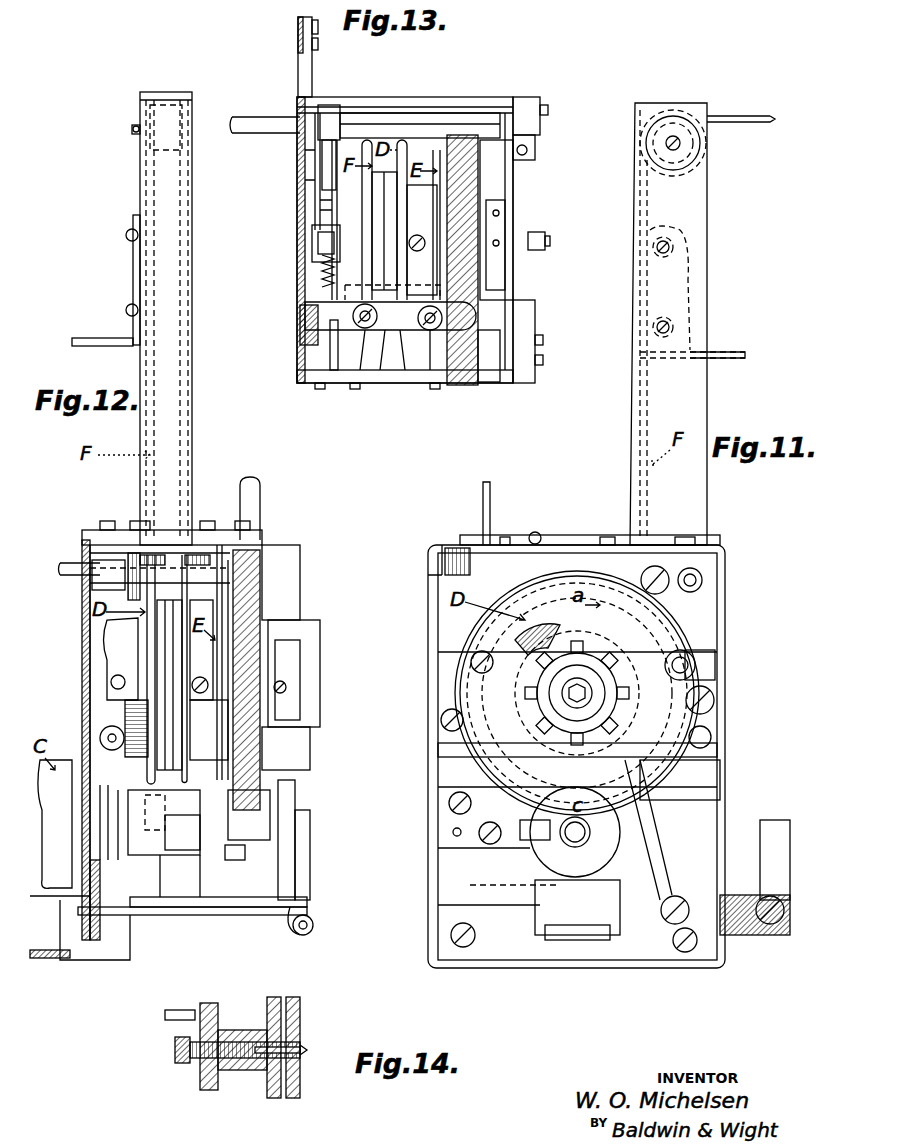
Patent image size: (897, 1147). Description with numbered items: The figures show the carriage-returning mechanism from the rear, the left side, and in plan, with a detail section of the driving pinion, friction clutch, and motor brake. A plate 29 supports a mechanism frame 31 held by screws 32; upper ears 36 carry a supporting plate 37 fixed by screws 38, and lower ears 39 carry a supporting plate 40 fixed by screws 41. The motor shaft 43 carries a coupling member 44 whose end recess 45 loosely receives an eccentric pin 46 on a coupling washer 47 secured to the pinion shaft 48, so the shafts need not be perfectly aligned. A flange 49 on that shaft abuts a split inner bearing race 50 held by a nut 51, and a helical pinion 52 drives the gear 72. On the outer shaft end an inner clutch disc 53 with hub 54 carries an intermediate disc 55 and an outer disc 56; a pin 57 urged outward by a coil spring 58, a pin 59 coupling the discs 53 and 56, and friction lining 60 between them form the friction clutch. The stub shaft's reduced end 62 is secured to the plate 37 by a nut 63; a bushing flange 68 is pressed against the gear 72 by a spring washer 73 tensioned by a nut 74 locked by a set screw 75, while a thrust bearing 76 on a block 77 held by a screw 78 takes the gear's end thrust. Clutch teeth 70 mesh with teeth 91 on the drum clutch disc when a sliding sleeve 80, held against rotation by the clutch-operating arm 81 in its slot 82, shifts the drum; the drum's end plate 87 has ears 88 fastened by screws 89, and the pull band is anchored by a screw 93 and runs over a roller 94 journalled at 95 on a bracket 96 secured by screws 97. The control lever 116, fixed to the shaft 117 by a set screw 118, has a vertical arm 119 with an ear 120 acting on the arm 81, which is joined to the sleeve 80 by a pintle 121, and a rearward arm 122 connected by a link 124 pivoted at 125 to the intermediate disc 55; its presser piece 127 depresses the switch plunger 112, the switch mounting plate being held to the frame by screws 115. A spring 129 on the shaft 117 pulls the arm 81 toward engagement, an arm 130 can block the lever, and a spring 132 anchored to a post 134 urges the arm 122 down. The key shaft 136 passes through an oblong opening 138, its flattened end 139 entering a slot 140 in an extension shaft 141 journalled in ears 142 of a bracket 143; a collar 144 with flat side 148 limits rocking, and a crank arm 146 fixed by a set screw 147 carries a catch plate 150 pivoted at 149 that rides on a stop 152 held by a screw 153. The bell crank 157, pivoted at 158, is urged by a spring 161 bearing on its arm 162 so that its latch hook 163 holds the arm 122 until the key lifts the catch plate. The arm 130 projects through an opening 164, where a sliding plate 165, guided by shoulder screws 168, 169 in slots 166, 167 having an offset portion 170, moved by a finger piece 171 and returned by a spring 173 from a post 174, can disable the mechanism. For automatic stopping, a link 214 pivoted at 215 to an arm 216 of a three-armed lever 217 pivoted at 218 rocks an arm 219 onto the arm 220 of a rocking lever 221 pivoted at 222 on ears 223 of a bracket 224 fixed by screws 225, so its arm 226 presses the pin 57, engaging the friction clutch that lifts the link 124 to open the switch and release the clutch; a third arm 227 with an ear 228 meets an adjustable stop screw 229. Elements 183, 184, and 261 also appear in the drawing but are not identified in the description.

In FIG. 12, the plate 29 is at (50, 958).
In FIG. 13, the mechanism frame 31 is at (360, 385).
In FIG. 12, the mechanism frame 31 is at (90, 950).
In FIG. 11, the mechanism frame 31 is at (480, 965).
In FIG. 12, the screws 32 is at (110, 945).
In FIG. 11, the screws 32 is at (700, 965).
In FIG. 13, the upper ears 36 is at (520, 100).
In FIG. 12, the upper ears 36 is at (300, 640).
In FIG. 13, the supporting plate 37 is at (510, 318).
In FIG. 12, the supporting plate 37 is at (300, 675).
In FIG. 11, the supporting plate 37 is at (470, 662).
In FIG. 13, the screws 38 is at (540, 112).
In FIG. 12, the screws 38 is at (305, 735).
In FIG. 11, the screws 38 is at (712, 733).
In FIG. 11, the lower ears 39 is at (480, 852).
In FIG. 12, the supporting plate 40 is at (195, 860).
In FIG. 11, the supporting plate 40 is at (530, 870).
In FIG. 14, the supporting plate 40 is at (205, 1010).
In FIG. 11, the screws 41 is at (452, 832).
In FIG. 12, the motor shaft 43 is at (55, 830).
In FIG. 12, the coupling member 44 is at (165, 880).
In FIG. 12, the end recess 45 is at (175, 800).
In FIG. 12, the eccentrically disposed pin 46 is at (150, 815).
In FIG. 14, the eccentrically disposed pin 46 is at (175, 1012).
In FIG. 12, the coupling washer 47 is at (180, 820).
In FIG. 14, the coupling washer 47 is at (175, 1028).
In FIG. 12, the pinion shaft 48 is at (249, 859).
In FIG. 14, the pinion shaft 48 is at (175, 1055).
In FIG. 14, the flange 49 is at (225, 1025).
In FIG. 14, the split inner anti-friction bearing race 50 is at (200, 1068).
In FIG. 14, the nut 51 is at (185, 1065).
In FIG. 12, the pinion 52 is at (298, 885).
In FIG. 14, the pinion 52 is at (250, 1062).
In FIG. 14, the inner clutch disc 53 is at (275, 1000).
In FIG. 14, the hub 54 is at (265, 1025).
In FIG. 14, the intermediate disc 55 is at (295, 1005).
In FIG. 14, the outer disc 56 is at (300, 1012).
In FIG. 12, the pin 57 is at (310, 830).
In FIG. 14, the pin 57 is at (305, 1045).
In FIG. 14, the coil spring 58 is at (225, 1063).
In FIG. 14, the pin 59 is at (300, 1065).
In FIG. 14, the friction clutch lining 60 is at (283, 1098).
In FIG. 13, the reduced end 62 is at (540, 248).
In FIG. 12, the reduced end 62 is at (322, 680).
In FIG. 11, the reduced end 62 is at (529, 676).
In FIG. 13, the nut 63 is at (547, 240).
In FIG. 12, the nut 63 is at (320, 720).
In FIG. 13, the peripheral flange 68 is at (495, 305).
In FIG. 12, the peripheral flange 68 is at (300, 655).
In FIG. 13, the teeth 70 is at (435, 225).
In FIG. 12, the teeth 70 is at (178, 705).
In FIG. 13, the gear 72 is at (470, 375).
In FIG. 12, the gear 72 is at (260, 610).
In FIG. 11, the gear 72 is at (530, 580).
In FIG. 13, the spring washer 73 is at (505, 205).
In FIG. 12, the spring washer 73 is at (285, 635).
In FIG. 13, the nut 74 is at (513, 215).
In FIG. 12, the nut 74 is at (312, 705).
In FIG. 12, the set screw 75 is at (315, 692).
In FIG. 11, the set screw 75 is at (529, 701).
In FIG. 12, the anti-friction thrust bearing 76 is at (305, 768).
In FIG. 11, the anti-friction thrust bearing 76 is at (532, 776).
In FIG. 12, the block 77 is at (310, 755).
In FIG. 12, the screw 78 is at (310, 745).
In FIG. 11, the screw 78 is at (529, 721).
In FIG. 13, the sleeve 80 is at (405, 258).
In FIG. 12, the sleeve 80 is at (100, 672).
In FIG. 13, the clutch-operating arm 81 is at (320, 250).
In FIG. 12, the clutch-operating arm 81 is at (100, 650).
In FIG. 13, the slot 82 is at (320, 232).
In FIG. 12, the end plate 87 is at (206, 606).
In FIG. 13, the ears 88 is at (398, 220).
In FIG. 12, the ears 88 is at (180, 655).
In FIG. 13, the screws 89 is at (408, 240).
In FIG. 12, the screws 89 is at (192, 683).
In FIG. 13, the teeth 91 is at (440, 200).
In FIG. 12, the teeth 91 is at (225, 650).
In FIG. 12, the screw 93 is at (170, 604).
In FIG. 11, the screw 93 is at (540, 625).
In FIG. 12, the pulley or roller 94 is at (140, 95).
In FIG. 11, the pulley or roller 94 is at (700, 150).
In FIG. 12, the journal 95 is at (135, 130).
In FIG. 11, the journal 95 is at (680, 142).
In FIG. 12, the bracket 96 is at (140, 178).
In FIG. 11, the bracket 96 is at (707, 210).
In FIG. 12, the screws 97 is at (110, 527).
In FIG. 11, the screws 97 is at (605, 538).
In FIG. 12, the plunger 112 is at (160, 795).
In FIG. 11, the screws 115 is at (735, 810).
In FIG. 13, the lever 116 is at (302, 155).
In FIG. 12, the lever 116 is at (82, 800).
In FIG. 13, the shaft 117 is at (322, 385).
In FIG. 12, the shaft 117 is at (82, 780).
In FIG. 11, the shaft 117 is at (438, 750).
In FIG. 13, the set screw 118 is at (310, 175).
In FIG. 12, the set screw 118 is at (100, 742).
In FIG. 13, the vertically extending arm 119 is at (315, 195).
In FIG. 12, the vertically extending arm 119 is at (100, 612).
In FIG. 11, the vertically extending arm 119 is at (620, 640).
In FIG. 13, the ear 120 is at (322, 208).
In FIG. 12, the ear 120 is at (110, 630).
In FIG. 11, the ear 120 is at (582, 611).
In FIG. 13, the pintle 121 is at (300, 240).
In FIG. 12, the pintle 121 is at (110, 685).
In FIG. 12, the horizontally and rearwardly extending arm 122 is at (110, 700).
In FIG. 13, the link 124 is at (520, 172).
In FIG. 12, the link 124 is at (295, 790).
In FIG. 11, the link 124 is at (725, 815).
In FIG. 12, the pivot 125 is at (298, 870).
In FIG. 11, the pivot 125 is at (640, 900).
In FIG. 12, the presser piece 127 is at (147, 780).
In FIG. 13, the spring 129 is at (322, 268).
In FIG. 12, the spring 129 is at (100, 715).
In FIG. 11, the spring 129 is at (471, 803).
In FIG. 13, the arm 130 is at (330, 345).
In FIG. 12, the arm 130 is at (95, 580).
In FIG. 11, the arm 130 is at (500, 565).
In FIG. 12, the spring 132 is at (285, 805).
In FIG. 11, the spring 132 is at (715, 785).
In FIG. 12, the fixed post 134 is at (250, 845).
In FIG. 13, the shaft 136 is at (300, 122).
In FIG. 12, the shaft 136 is at (65, 565).
In FIG. 13, the oblong opening 138 is at (297, 103).
In FIG. 13, the flattened end 139 is at (330, 105).
In FIG. 12, the flattened end 139 is at (98, 540).
In FIG. 13, the slot 140 is at (305, 130).
In FIG. 13, the extension shaft 141 is at (395, 120).
In FIG. 12, the extension shaft 141 is at (202, 571).
In FIG. 11, the extension shaft 141 is at (710, 595).
In FIG. 13, the ears 142 is at (355, 115).
In FIG. 11, the ears 142 is at (710, 620).
In FIG. 13, the bracket 143 is at (455, 115).
In FIG. 13, the collar 144 is at (472, 110).
In FIG. 12, the collar 144 is at (240, 545).
In FIG. 13, the crank arm 146 is at (505, 105).
In FIG. 12, the crank arm 146 is at (290, 560).
In FIG. 11, the crank arm 146 is at (700, 545).
In FIG. 13, the set screw 147 is at (490, 110).
In FIG. 12, the set screw 147 is at (275, 550).
In FIG. 11, the set screw 147 is at (705, 560).
In FIG. 11, the flat side 148 is at (710, 585).
In FIG. 13, the pivot 149 is at (515, 160).
In FIG. 12, the pivot 149 is at (290, 570).
In FIG. 11, the pivot 149 is at (660, 570).
In FIG. 13, the catch plate 150 is at (510, 185).
In FIG. 12, the catch plate 150 is at (290, 585).
In FIG. 13, the stop 152 is at (533, 150).
In FIG. 12, the stop 152 is at (290, 620).
In FIG. 13, the screw 153 is at (535, 135).
In FIG. 12, the screw 153 is at (322, 662).
In FIG. 11, the bell crank 157 is at (712, 698).
In FIG. 11, the pivot 158 is at (712, 708).
In FIG. 11, the spring 161 is at (700, 640).
In FIG. 11, the arm 162 is at (705, 655).
In FIG. 11, the latch hook 163 is at (708, 680).
In FIG. 13, the opening 164 is at (305, 318).
In FIG. 12, the opening 164 is at (82, 545).
In FIG. 13, the plate 165 is at (400, 330).
In FIG. 12, the plate 165 is at (262, 525).
In FIG. 11, the plate 165 is at (505, 535).
In FIG. 13, the slot 166 is at (385, 330).
In FIG. 13, the slot 167 is at (450, 370).
In FIG. 13, the shoulder screw 168 is at (365, 330).
In FIG. 12, the shoulder screw 168 is at (148, 527).
In FIG. 13, the shoulder screw 169 is at (420, 335).
In FIG. 12, the shoulder screw 169 is at (220, 522).
In FIG. 11, the shoulder screw 169 is at (483, 530).
In FIG. 13, the offset portion 170 is at (475, 318).
In FIG. 13, the finger piece 171 is at (470, 345).
In FIG. 12, the finger piece 171 is at (262, 500).
In FIG. 11, the finger piece 171 is at (483, 495).
In FIG. 13, the spring 173 is at (330, 280).
In FIG. 12, the spring 173 is at (188, 520).
In FIG. 13, the fixed post 174 is at (455, 292).
In FIG. 12, the fixed post 174 is at (205, 520).
In FIG. 11, the fixed post 174 is at (545, 535).
In FIG. 12, the bracket 183 is at (135, 280).
In FIG. 11, the bracket 183 is at (690, 287).
In FIG. 12, the screw 184 is at (131, 236).
In FIG. 11, the screw 184 is at (673, 250).
In FIG. 13, the link 214 is at (298, 30).
In FIG. 11, the link 214 is at (772, 828).
In FIG. 13, the pivot 215 is at (312, 42).
In FIG. 11, the pivot 215 is at (772, 925).
In FIG. 13, the arm 216 is at (302, 75).
In FIG. 11, the arm 216 is at (755, 935).
In FIG. 12, the three-armed lever 217 is at (88, 896).
In FIG. 11, the three-armed lever 217 is at (740, 940).
In FIG. 12, the pivot 218 is at (128, 935).
In FIG. 11, the pivot 218 is at (675, 930).
In FIG. 12, the arm 219 is at (110, 875).
In FIG. 11, the arm 219 is at (535, 890).
In FIG. 12, the horizontally extending arm 220 is at (190, 912).
In FIG. 11, the horizontally extending arm 220 is at (535, 912).
In FIG. 12, the rocking lever 221 is at (305, 902).
In FIG. 11, the rocking lever 221 is at (565, 935).
In FIG. 12, the pivot 222 is at (313, 928).
In FIG. 11, the pivot 222 is at (473, 935).
In FIG. 12, the ears 223 is at (290, 940).
In FIG. 11, the ears 223 is at (600, 945).
In FIG. 12, the bracket 224 is at (250, 912).
In FIG. 11, the bracket 224 is at (520, 905).
In FIG. 12, the screws 225 is at (210, 900).
In FIG. 11, the screws 225 is at (530, 855).
In FIG. 12, the vertically extending arm 226 is at (308, 845).
In FIG. 11, the vertically extending arm 226 is at (546, 828).
In FIG. 11, the third arm 227 is at (665, 935).
In FIG. 11, the ear 228 is at (779, 841).
In FIG. 12, the adjustable stop screw 229 is at (90, 822).
In FIG. 11, the adjustable stop screw 229 is at (779, 856).
In FIG. 12, the plate 261 is at (80, 850).